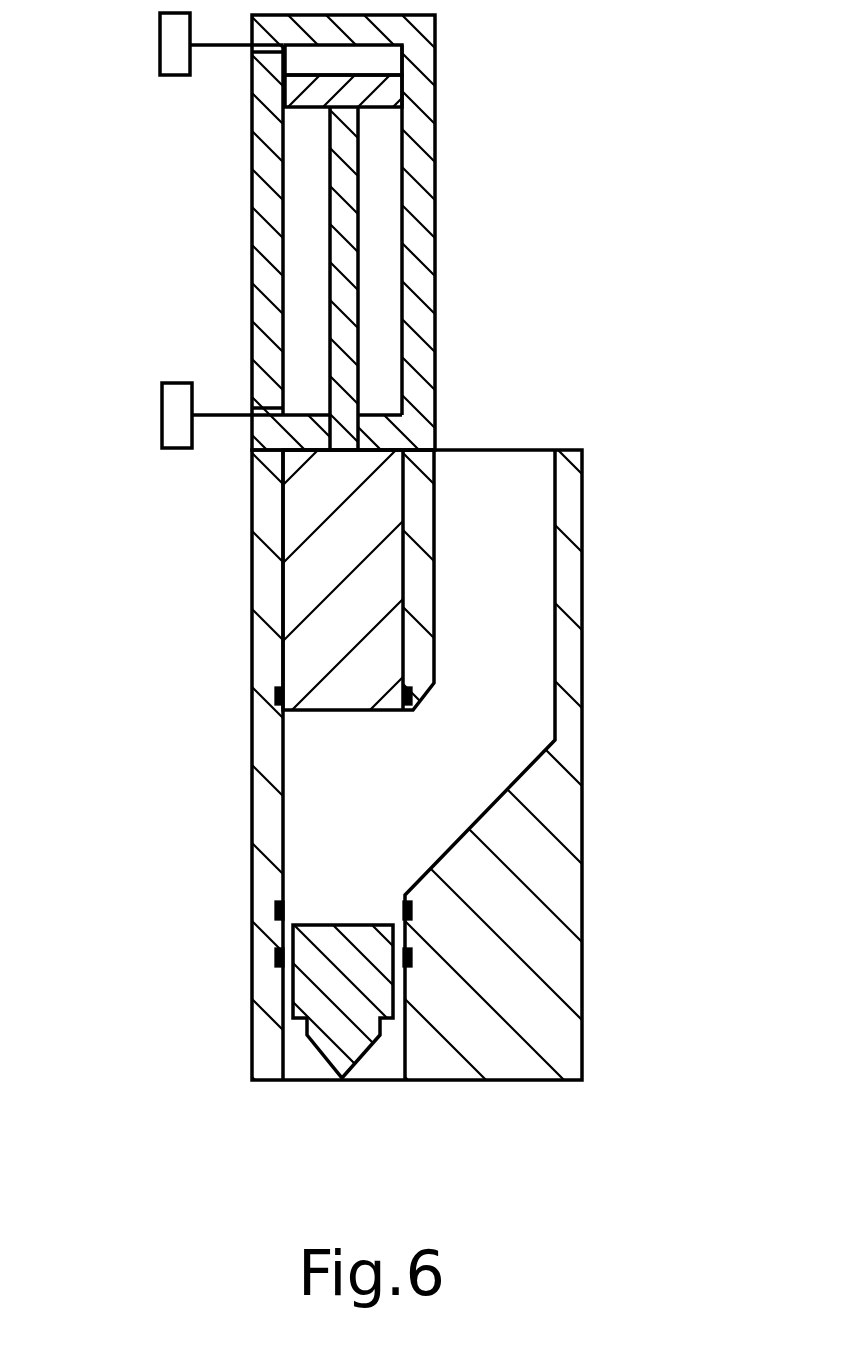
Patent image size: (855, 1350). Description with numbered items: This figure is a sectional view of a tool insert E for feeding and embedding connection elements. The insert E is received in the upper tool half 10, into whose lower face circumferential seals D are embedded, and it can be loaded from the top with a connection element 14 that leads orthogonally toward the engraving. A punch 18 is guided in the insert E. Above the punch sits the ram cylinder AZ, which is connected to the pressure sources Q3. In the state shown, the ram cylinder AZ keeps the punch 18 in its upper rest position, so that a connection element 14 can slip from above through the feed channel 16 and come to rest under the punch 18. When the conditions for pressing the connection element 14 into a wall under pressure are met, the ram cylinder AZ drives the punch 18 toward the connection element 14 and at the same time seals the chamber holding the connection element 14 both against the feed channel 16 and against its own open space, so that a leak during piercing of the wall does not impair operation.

The pressure source Q3 is at (173, 57).
The ram cylinder AZ is at (265, 245).
The punch 18 is at (337, 612).
The seals D is at (275, 693).
The feed channel 16 is at (528, 577).
The insert E is at (583, 685).
The upper tool half 10 is at (560, 878).
The connection element 14 is at (362, 978).